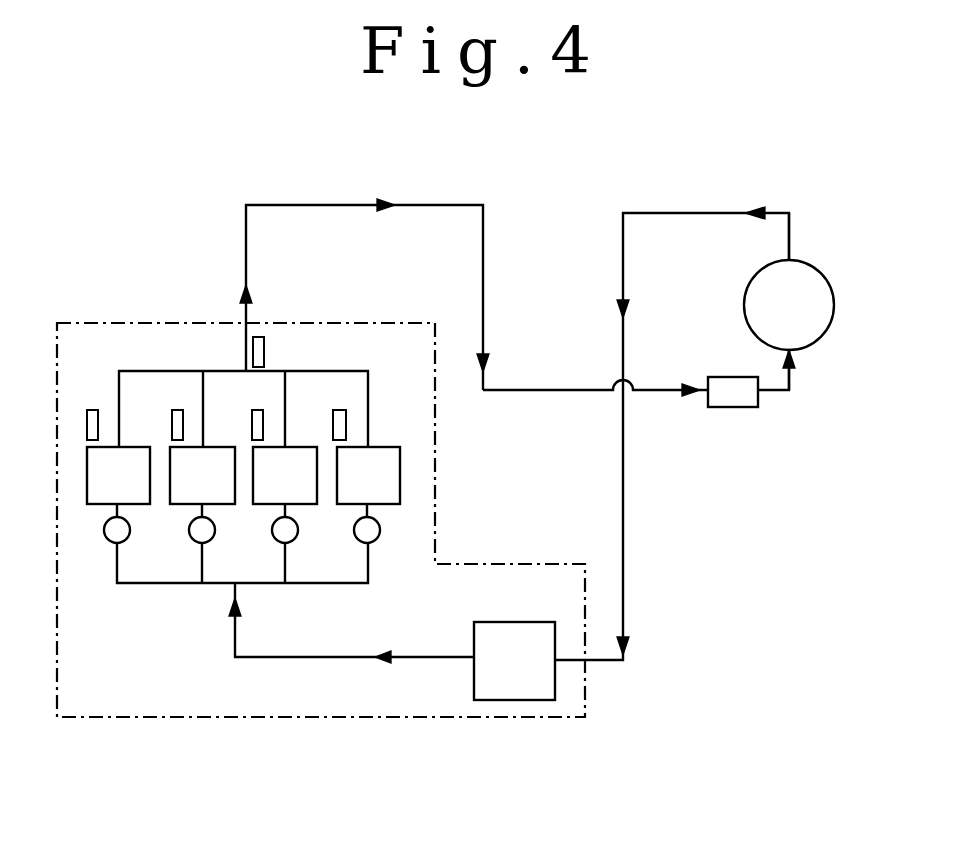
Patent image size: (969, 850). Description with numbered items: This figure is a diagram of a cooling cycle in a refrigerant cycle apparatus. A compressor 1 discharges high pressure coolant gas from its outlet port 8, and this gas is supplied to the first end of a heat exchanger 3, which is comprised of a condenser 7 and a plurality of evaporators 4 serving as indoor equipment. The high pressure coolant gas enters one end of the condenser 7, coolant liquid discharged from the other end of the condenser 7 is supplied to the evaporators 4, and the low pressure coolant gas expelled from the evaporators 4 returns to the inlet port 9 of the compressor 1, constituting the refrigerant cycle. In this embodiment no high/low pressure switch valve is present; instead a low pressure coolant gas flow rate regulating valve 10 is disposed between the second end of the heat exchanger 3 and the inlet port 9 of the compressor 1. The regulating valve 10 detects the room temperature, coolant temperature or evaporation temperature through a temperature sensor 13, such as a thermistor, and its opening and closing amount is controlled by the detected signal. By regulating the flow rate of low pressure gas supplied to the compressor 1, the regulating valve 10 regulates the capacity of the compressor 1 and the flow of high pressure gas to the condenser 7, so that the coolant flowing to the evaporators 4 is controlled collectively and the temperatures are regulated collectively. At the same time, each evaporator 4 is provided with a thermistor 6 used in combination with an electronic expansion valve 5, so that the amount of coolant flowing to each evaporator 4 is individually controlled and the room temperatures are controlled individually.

The compressor 1 is at (813, 312).
The heat exchanger 3 is at (55, 592).
The evaporator 4 is at (100, 476).
The electronic expansion valve 5 is at (113, 528).
The thermistor 6 is at (93, 420).
The condenser 7 is at (480, 636).
The outlet port 8 is at (789, 247).
The inlet port 9 is at (792, 350).
The low pressure coolant gas flow rate regulating valve 10 is at (732, 408).
The temperature sensor 13 is at (262, 350).